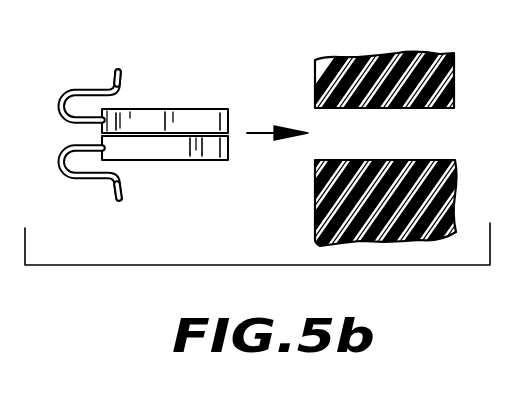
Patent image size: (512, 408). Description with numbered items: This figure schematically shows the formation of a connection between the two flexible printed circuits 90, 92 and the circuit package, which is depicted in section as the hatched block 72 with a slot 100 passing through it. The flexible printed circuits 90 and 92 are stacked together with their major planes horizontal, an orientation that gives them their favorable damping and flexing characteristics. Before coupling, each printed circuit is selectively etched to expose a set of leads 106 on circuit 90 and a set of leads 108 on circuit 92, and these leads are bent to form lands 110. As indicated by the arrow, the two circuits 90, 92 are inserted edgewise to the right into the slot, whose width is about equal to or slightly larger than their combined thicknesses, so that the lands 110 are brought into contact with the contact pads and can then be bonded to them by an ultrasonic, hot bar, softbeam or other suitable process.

The mold die 72 is at (368, 62).
The flexible printed circuit 90 is at (207, 118).
The flexible printed circuit 92 is at (212, 152).
The slot 100 is at (349, 104).
The leads 106 is at (72, 88).
The leads 108 is at (63, 174).
The lands 110 is at (125, 84).